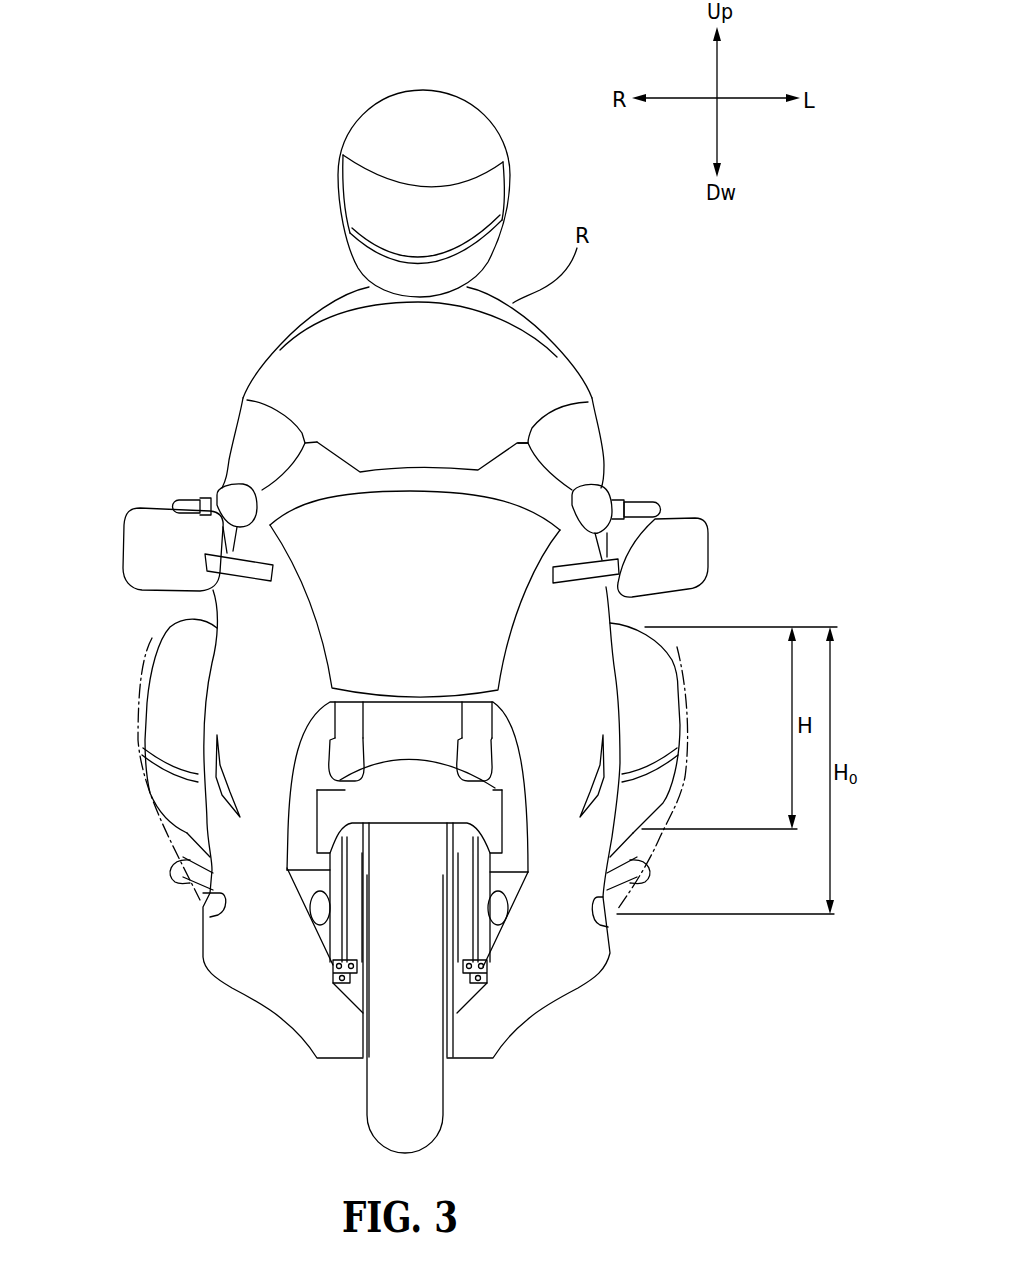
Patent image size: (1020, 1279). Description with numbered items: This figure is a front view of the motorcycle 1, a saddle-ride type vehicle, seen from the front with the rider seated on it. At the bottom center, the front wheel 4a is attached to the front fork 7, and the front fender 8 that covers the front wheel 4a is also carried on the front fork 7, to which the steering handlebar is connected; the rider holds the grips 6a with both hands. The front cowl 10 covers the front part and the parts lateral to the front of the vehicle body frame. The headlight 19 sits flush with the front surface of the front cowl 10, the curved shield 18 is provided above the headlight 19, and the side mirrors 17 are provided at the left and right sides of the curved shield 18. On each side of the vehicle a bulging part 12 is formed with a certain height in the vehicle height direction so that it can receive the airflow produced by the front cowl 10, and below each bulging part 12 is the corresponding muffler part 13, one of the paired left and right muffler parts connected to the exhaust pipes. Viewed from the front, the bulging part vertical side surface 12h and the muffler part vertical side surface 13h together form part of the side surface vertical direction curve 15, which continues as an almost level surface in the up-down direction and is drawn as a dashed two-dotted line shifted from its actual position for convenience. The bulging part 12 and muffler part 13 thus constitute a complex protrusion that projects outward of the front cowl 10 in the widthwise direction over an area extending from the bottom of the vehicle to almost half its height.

The motorcycle 1 is at (660, 357).
The front wheel 4a is at (425, 1107).
The grips 6a is at (207, 497).
The front fork 7 is at (343, 722).
The front fender 8 is at (452, 805).
The front cowl 10 is at (570, 627).
The bulging part 12 is at (140, 662).
The bulging part vertical side surface 12h is at (143, 703).
The muffler part 13 is at (187, 833).
The muffler part vertical side surface 13h is at (183, 917).
The side surface vertical direction curve 15 is at (133, 753).
The side mirrors 17 is at (157, 538).
The curved shield 18 is at (360, 373).
The headlight 19 is at (357, 612).